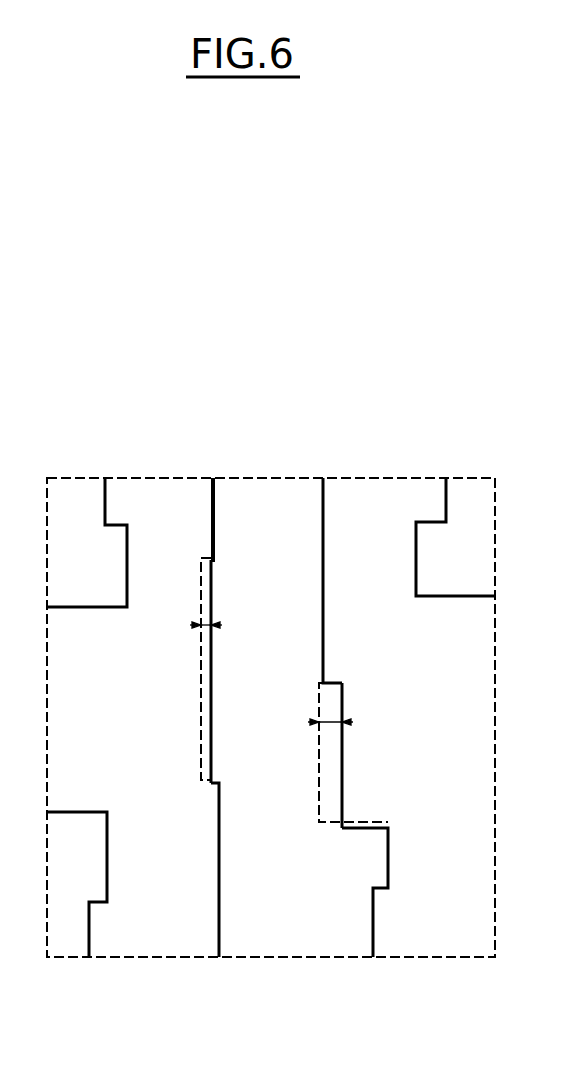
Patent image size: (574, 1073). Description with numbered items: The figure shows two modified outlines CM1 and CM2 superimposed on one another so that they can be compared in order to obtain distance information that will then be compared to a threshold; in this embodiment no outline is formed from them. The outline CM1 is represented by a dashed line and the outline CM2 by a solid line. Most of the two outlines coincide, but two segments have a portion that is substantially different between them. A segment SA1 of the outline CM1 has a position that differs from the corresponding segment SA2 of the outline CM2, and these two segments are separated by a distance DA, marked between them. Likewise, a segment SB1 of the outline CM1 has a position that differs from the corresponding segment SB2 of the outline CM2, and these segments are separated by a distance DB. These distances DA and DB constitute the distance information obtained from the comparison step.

The modified outline CM1 is at (227, 690).
The modified outline CM2 is at (363, 690).
The segment SA1 is at (201, 672).
The segment SA2 is at (212, 673).
The distance DA is at (205, 622).
The segment SB1 is at (319, 756).
The segment SB2 is at (345, 757).
The distance DB is at (331, 722).